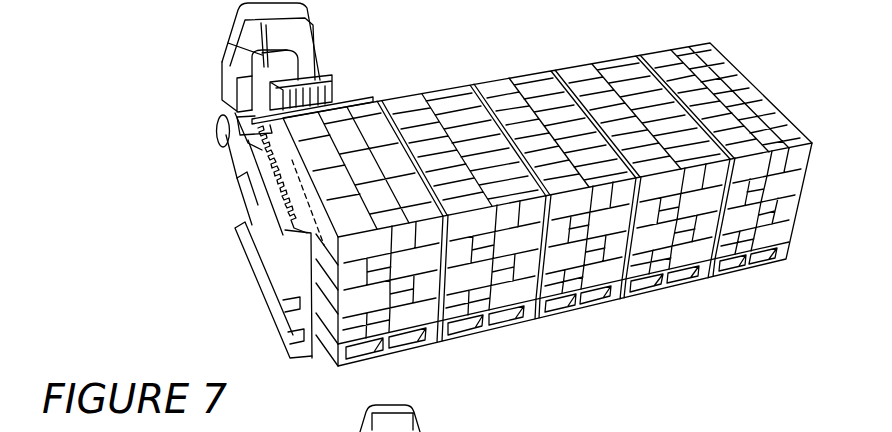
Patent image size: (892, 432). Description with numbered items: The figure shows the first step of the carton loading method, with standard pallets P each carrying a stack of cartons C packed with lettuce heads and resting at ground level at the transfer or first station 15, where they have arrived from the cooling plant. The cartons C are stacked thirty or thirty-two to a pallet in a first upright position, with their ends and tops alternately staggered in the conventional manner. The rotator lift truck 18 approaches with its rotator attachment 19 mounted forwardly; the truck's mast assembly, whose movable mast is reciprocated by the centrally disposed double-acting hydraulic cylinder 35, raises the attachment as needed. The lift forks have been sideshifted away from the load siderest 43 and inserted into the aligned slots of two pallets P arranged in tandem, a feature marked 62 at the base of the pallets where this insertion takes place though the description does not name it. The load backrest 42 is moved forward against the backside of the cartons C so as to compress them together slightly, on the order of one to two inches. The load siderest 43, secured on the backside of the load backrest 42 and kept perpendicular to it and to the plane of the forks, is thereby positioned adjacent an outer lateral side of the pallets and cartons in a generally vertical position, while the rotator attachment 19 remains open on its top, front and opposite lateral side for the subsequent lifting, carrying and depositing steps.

The rotator lift truck 18 is at (181, 62).
The transfer or first station 15 is at (236, 188).
The rotator attachment 19 is at (222, 242).
The load siderest 43 is at (270, 258).
The double-acting hydraulic cylinder 35 is at (308, 98).
The load backrest 42 is at (357, 100).
The pallet fork openings 62 is at (400, 343).
The cartons C is at (491, 61).
The pallets P is at (563, 320).